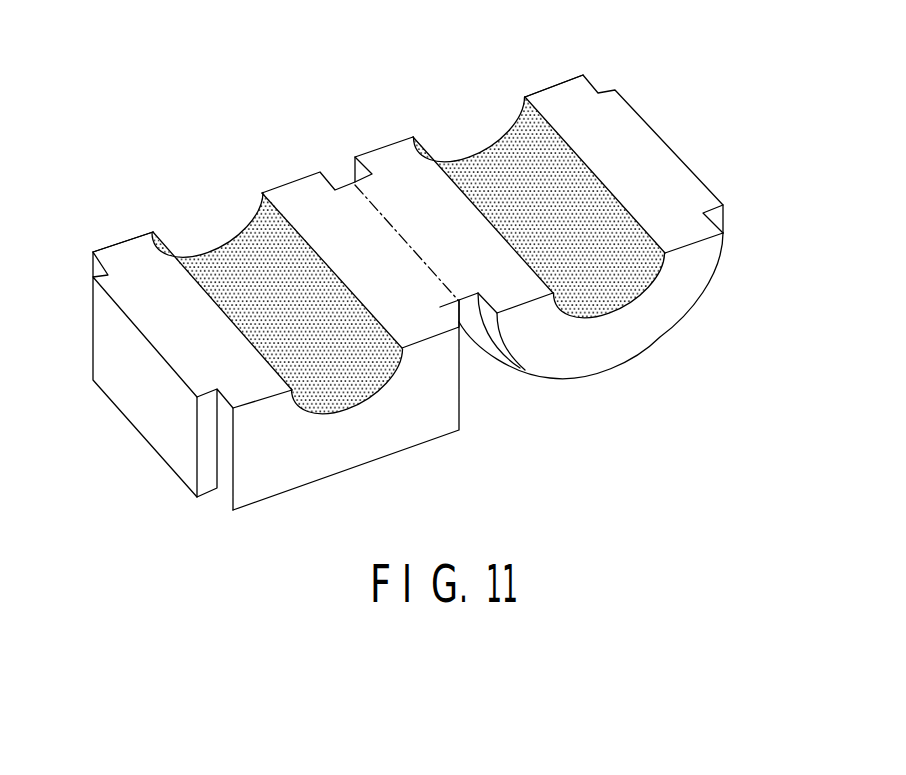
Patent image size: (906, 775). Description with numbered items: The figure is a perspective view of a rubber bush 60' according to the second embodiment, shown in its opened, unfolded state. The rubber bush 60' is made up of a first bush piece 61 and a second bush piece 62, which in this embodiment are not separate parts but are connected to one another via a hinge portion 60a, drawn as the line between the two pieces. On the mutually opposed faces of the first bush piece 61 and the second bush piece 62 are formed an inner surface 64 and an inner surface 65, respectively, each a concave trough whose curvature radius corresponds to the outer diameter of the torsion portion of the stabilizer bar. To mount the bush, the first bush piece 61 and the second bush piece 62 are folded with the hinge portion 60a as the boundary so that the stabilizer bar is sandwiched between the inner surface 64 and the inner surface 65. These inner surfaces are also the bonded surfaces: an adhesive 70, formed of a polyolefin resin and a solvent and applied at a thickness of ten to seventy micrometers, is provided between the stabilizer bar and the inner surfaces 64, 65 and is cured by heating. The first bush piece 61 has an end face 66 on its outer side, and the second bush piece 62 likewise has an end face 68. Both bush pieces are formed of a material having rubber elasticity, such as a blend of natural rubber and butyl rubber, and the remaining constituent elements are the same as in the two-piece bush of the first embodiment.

The rubber bush 60' is at (413, 281).
The hinge portion 60a is at (392, 224).
The first bush piece 61 is at (153, 418).
The second bush piece 62 is at (714, 275).
The inner surface 64 is at (208, 290).
The inner surface 65 is at (473, 193).
The end face 66 is at (290, 468).
The end face 68 is at (603, 353).
The adhesive 70 is at (623, 217).